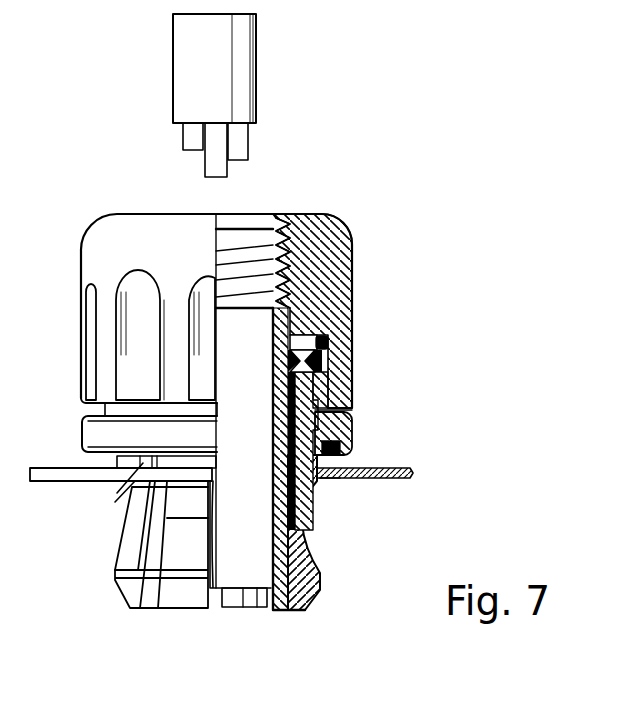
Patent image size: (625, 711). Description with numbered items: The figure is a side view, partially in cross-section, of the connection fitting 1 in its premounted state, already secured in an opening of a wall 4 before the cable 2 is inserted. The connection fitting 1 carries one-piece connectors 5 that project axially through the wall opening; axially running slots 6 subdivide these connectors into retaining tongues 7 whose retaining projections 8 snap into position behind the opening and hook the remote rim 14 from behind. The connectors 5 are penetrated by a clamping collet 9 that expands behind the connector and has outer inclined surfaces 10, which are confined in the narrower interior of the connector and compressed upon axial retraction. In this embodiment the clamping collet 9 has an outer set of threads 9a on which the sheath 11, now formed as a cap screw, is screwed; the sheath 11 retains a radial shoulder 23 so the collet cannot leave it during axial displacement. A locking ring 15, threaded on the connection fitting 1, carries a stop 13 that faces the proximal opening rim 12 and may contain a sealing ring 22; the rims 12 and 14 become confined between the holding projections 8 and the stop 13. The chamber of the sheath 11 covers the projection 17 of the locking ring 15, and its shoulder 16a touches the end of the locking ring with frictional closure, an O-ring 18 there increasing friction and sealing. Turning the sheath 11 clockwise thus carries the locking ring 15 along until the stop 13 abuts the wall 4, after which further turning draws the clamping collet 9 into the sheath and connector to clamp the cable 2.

The connection fitting 1 is at (384, 167).
The cable 2 is at (240, 73).
The wall 4 is at (392, 480).
The connector 5 is at (100, 463).
The slot 6 is at (143, 463).
The retaining tongue 7 is at (133, 520).
The retaining projection 8 is at (133, 487).
The clamping collet 9 is at (272, 437).
The outer set of threads 9a is at (272, 370).
The inclined surface 10 is at (313, 538).
The sheath 11 is at (345, 247).
The opening rim 12 is at (323, 466).
The stop 13 is at (350, 442).
The rim 14 is at (325, 480).
The locking ring 15 is at (340, 417).
The shoulder 16a is at (343, 333).
The projection 17 is at (323, 363).
The O-ring 18 is at (325, 342).
The sealing ring 22 is at (347, 427).
The radial shoulder 23 is at (281, 232).